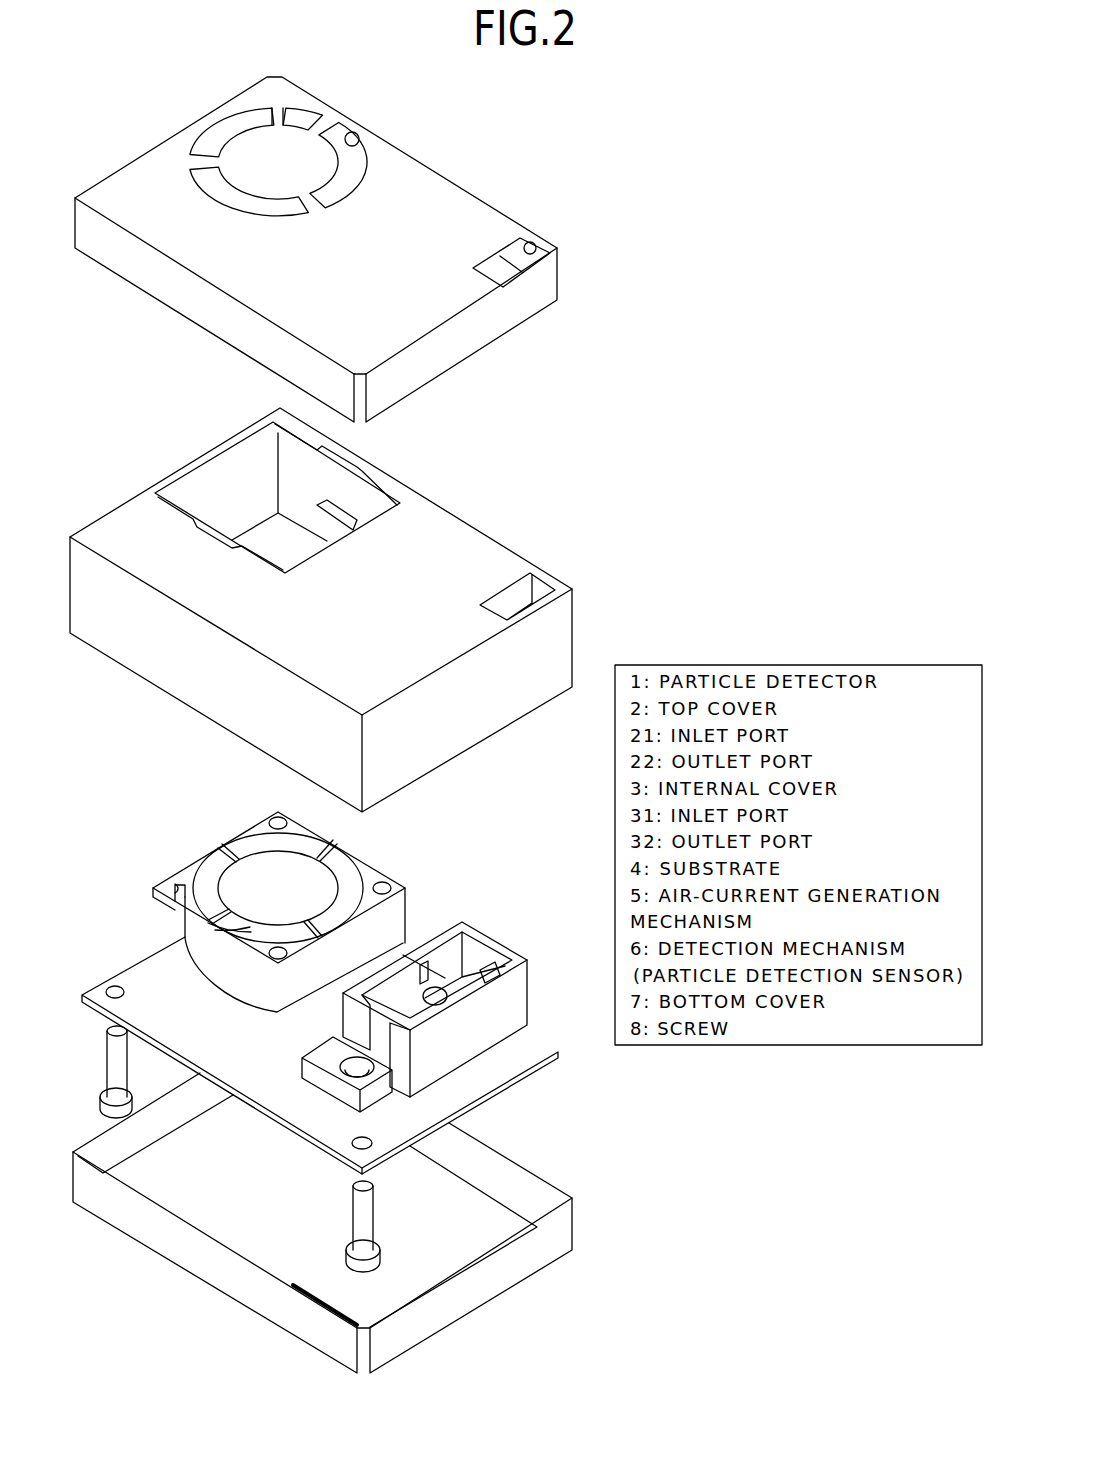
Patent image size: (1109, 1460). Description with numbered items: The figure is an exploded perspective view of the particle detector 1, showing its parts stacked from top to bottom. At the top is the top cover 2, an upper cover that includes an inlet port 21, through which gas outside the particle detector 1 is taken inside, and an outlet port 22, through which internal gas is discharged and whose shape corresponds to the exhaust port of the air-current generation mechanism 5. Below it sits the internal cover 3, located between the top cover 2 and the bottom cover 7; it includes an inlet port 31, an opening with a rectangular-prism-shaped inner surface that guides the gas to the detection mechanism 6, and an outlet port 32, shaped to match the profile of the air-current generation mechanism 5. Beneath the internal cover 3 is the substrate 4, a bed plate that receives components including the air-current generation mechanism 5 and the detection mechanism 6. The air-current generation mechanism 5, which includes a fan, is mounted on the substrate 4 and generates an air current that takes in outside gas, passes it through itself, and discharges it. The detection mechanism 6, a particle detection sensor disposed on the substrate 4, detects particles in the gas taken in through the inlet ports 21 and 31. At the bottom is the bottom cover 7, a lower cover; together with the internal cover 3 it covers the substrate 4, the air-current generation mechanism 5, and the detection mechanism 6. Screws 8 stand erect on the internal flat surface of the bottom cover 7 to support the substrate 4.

The particle detector 1 is at (703, 118).
The top cover 2 is at (433, 182).
The inlet port 21 is at (525, 242).
The outlet port 22 is at (349, 133).
The internal cover 3 is at (440, 520).
The inlet port 31 is at (537, 590).
The outlet port 32 is at (223, 485).
The substrate 4 is at (490, 1078).
The air-current generation mechanism 5 is at (208, 837).
The detection mechanism (particle detection sensor) 6 is at (488, 927).
The bottom cover 7 is at (490, 1287).
The screw 8 is at (103, 1063).